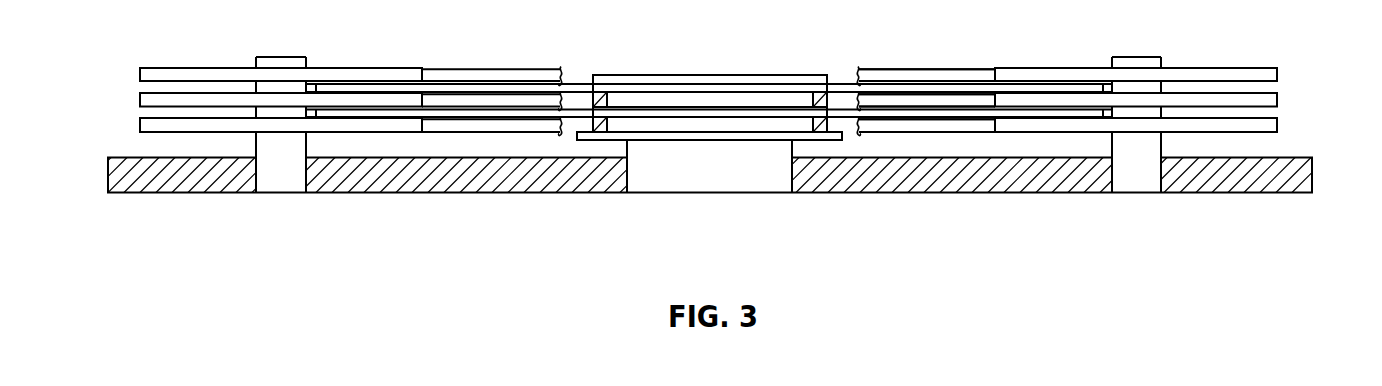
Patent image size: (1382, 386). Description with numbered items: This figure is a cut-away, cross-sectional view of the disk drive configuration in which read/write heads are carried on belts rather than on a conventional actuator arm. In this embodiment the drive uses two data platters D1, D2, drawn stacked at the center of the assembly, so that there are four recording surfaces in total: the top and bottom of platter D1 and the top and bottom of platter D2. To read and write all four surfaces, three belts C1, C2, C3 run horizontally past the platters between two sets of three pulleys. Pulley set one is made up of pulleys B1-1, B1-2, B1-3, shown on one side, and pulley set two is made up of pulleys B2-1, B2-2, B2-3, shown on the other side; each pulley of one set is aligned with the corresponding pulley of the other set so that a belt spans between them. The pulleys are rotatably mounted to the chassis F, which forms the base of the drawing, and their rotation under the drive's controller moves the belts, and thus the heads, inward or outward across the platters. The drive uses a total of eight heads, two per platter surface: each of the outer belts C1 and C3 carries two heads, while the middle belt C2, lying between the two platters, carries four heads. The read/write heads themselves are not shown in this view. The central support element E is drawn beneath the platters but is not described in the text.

The pulley B1-1 is at (1264, 79).
The pulley B1-2 is at (1264, 104).
The pulley B1-3 is at (1264, 129).
The pulley B2-1 is at (153, 79).
The pulley B2-2 is at (153, 104).
The pulley B2-3 is at (153, 129).
The belt C1 is at (898, 77).
The middle belt C2 is at (955, 103).
The belt C3 is at (877, 125).
The data platter D1 is at (572, 88).
The data platter D2 is at (665, 115).
The central support E is at (710, 173).
The chassis F is at (413, 180).